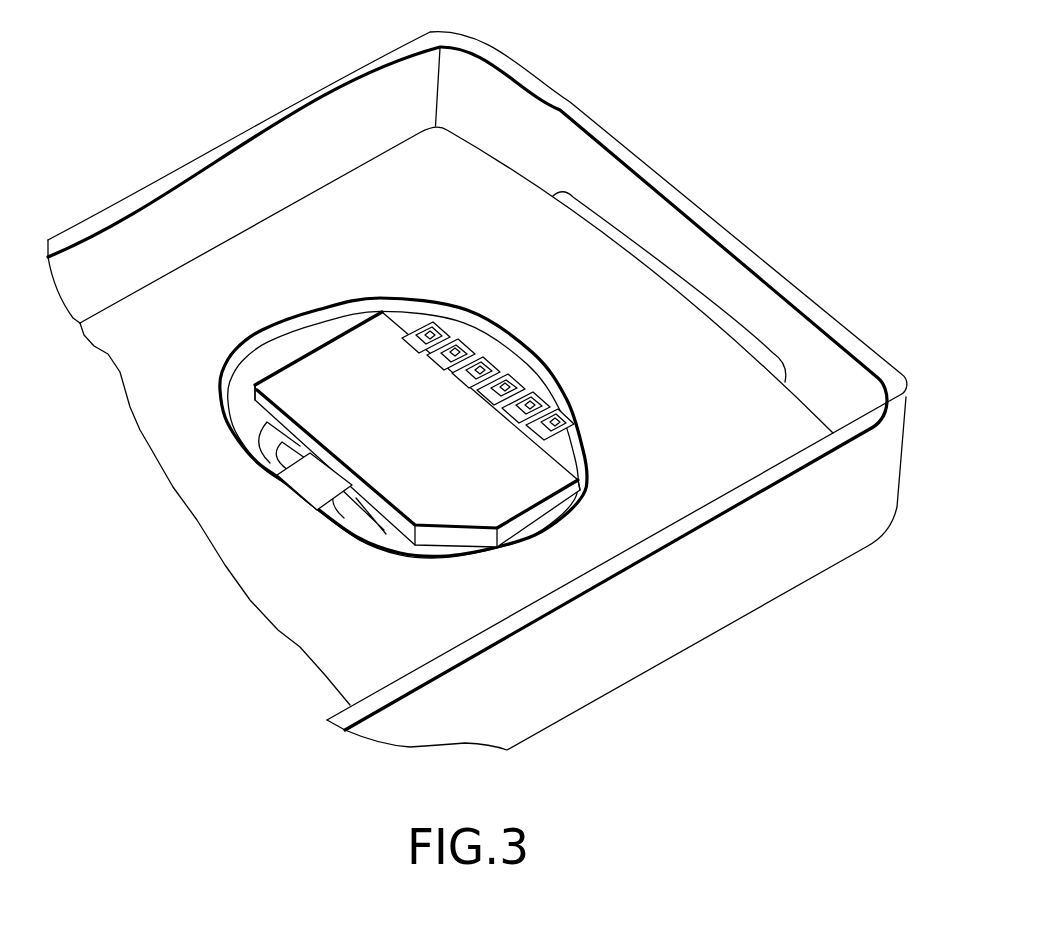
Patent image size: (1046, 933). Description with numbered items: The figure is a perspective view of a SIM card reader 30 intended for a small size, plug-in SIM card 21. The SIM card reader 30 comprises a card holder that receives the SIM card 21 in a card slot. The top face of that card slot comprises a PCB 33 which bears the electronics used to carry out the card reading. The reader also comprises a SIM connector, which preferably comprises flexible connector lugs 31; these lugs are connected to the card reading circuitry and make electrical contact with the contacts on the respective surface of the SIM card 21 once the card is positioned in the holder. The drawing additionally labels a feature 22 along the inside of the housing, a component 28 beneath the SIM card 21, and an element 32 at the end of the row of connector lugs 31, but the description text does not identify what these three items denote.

The SIM card reader 30 is at (642, 86).
The PCB 33 is at (670, 510).
The guide rib 22 is at (688, 296).
The SIM card 21 is at (300, 373).
The connector 28 is at (301, 483).
The flexible connector lugs 31 is at (460, 320).
The light receiving element 32 is at (531, 432).